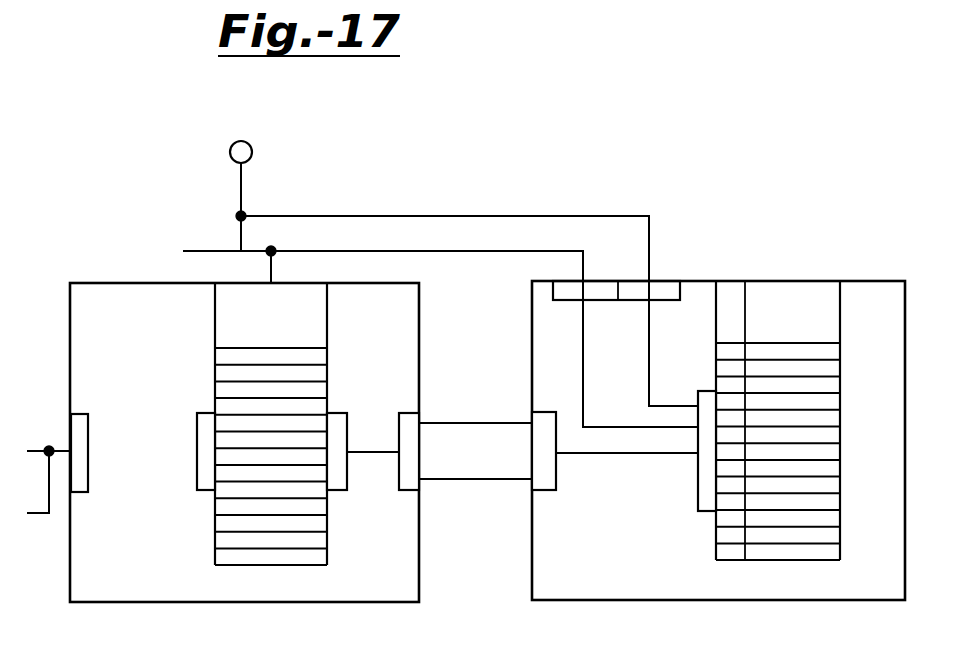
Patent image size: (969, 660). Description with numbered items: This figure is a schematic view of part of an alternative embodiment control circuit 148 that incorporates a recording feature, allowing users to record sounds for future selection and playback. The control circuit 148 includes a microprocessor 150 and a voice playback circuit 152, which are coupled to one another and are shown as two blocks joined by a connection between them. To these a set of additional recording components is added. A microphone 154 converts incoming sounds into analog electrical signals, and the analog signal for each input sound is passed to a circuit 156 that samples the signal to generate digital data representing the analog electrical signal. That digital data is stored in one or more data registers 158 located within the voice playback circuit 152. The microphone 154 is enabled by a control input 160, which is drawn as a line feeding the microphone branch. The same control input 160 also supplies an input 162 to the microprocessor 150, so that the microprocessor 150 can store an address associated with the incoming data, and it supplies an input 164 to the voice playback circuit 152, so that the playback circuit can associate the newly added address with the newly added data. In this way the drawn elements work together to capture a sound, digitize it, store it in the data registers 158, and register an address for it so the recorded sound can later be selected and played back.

The control circuit 148 is at (643, 205).
The microprocessor 150 is at (150, 568).
The voice playback circuit 152 is at (635, 565).
The microphone 154 is at (242, 141).
The sampling circuit 156 is at (667, 280).
The data registers 158 is at (840, 398).
The control input 160 is at (198, 251).
The input to microprocessor 162 is at (276, 264).
The input to playback circuit 164 is at (448, 251).